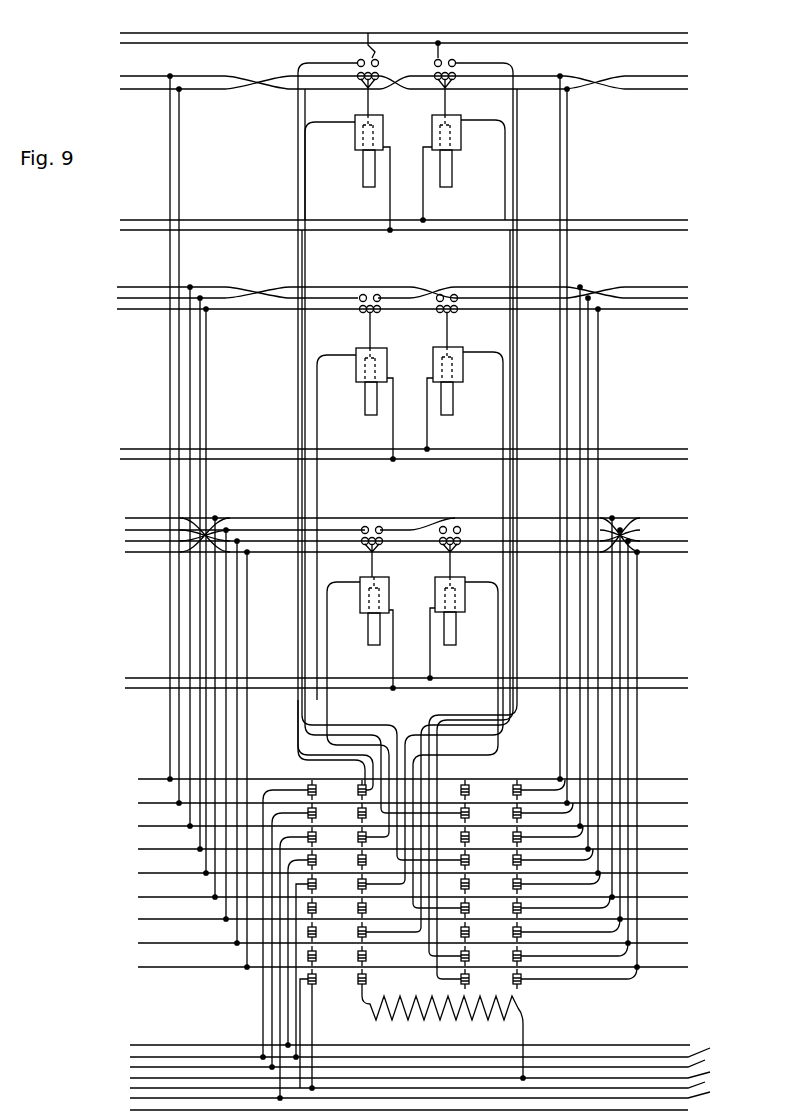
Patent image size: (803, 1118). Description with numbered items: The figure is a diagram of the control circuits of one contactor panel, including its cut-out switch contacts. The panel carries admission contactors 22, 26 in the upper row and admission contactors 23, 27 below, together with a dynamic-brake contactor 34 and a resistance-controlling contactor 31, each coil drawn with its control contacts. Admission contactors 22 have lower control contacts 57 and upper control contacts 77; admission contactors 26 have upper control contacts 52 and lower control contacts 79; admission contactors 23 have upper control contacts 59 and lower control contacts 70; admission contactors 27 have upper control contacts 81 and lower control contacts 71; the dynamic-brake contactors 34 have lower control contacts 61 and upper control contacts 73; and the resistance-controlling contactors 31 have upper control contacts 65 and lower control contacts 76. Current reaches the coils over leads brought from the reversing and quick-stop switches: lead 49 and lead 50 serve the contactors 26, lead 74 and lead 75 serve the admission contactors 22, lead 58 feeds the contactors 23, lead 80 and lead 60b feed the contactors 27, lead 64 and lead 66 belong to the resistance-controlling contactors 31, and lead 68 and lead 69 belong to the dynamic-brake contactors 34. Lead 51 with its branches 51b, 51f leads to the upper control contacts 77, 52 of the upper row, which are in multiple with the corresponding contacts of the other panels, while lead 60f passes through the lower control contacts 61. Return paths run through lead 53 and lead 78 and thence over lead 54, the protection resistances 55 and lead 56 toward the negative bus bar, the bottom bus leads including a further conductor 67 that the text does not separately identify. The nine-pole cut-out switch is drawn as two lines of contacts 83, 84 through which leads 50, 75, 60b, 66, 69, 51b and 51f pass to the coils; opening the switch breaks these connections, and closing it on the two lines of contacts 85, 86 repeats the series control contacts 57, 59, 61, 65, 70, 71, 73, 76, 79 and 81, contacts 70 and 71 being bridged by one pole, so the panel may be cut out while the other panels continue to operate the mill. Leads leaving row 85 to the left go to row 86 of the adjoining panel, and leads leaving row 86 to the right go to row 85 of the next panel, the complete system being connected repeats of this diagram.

The lead 78 is at (548, 33).
The lead 53 is at (638, 43).
The upper control contacts 77 is at (358, 62).
The upper control contacts 52 is at (474, 370).
The lower control contacts 57 is at (360, 82).
The lower control contacts 79 is at (452, 82).
The lead 51b is at (298, 160).
The lead 51f is at (516, 148).
The admission contactors 22 is at (352, 150).
The admission contactors 26 is at (457, 152).
The lead 49 is at (633, 220).
The lead 74 is at (636, 230).
The lead 75 is at (303, 280).
The upper control contacts 59 is at (423, 557).
The upper control contacts 81 is at (469, 568).
The lower control contacts 70 is at (364, 313).
The lower control contacts 71 is at (452, 313).
The admission contactors 23 is at (352, 384).
The admission contactors 27 is at (458, 384).
The lead 60b is at (160, 287).
The lead 60f is at (127, 305).
The lead 50 is at (508, 240).
The lead 80 is at (648, 449).
The lead 58 is at (648, 459).
The lead 66 is at (648, 518).
The upper control contacts 73 is at (364, 526).
The upper control contacts 65 is at (460, 527).
The lower control contacts 61 is at (362, 548).
The lower control contacts 76 is at (458, 548).
The dynamic-brake contactors 34 is at (358, 614).
The resistance-controlling contactors 31 is at (458, 614).
The lead 64 is at (648, 678).
The lead 68 is at (648, 688).
The lead 69 is at (340, 716).
The line of contacts 84 is at (300, 782).
The line of contacts 83 is at (358, 782).
The line of contacts 85 is at (462, 770).
The line of contacts 86 is at (517, 783).
The lead 54 is at (698, 1080).
The protection resistances 55 is at (460, 1000).
The lead 51 is at (438, 1045).
The lead 56 is at (439, 1075).
The conductor 67 is at (688, 1110).